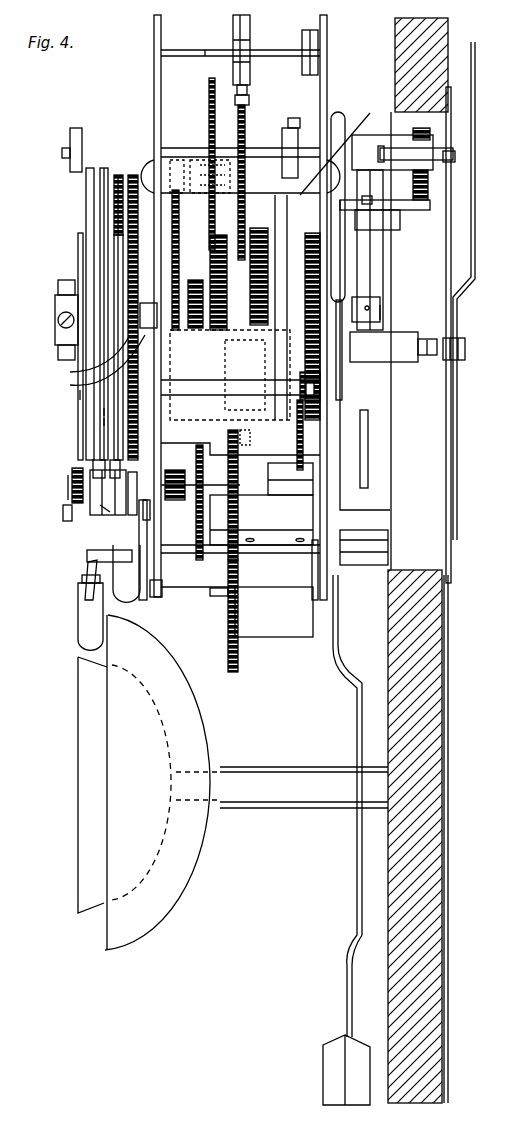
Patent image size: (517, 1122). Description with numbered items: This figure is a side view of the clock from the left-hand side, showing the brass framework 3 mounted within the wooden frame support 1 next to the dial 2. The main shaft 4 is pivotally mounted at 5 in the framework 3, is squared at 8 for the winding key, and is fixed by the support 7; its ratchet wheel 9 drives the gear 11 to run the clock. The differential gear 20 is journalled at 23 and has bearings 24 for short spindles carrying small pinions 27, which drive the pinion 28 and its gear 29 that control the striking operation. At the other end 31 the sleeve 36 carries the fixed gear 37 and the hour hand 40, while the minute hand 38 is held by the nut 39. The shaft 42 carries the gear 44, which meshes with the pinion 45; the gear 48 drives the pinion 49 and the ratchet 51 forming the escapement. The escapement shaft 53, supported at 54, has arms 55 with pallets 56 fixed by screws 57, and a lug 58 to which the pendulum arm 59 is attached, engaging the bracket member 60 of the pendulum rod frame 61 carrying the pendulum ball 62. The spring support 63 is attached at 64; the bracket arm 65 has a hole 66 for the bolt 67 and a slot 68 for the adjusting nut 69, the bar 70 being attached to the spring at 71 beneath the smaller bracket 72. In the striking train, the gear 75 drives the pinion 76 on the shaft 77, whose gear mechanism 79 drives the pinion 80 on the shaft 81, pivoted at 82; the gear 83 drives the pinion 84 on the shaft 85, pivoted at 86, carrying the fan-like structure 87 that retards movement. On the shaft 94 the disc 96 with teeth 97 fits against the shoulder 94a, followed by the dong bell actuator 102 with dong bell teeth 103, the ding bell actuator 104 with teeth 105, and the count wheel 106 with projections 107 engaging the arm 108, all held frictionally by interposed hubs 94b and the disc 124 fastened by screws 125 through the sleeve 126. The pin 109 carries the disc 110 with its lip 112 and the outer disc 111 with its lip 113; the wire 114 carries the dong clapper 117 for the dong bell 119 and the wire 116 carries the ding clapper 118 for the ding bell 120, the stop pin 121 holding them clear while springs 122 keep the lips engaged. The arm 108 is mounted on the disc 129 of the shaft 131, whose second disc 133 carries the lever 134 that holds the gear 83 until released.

The wooden frame support 1 is at (395, 857).
The dial 2 is at (448, 588).
The brass framework 3 is at (154, 24).
The main shaft 4 is at (320, 580).
The pivot mounting 5 is at (161, 597).
The support 7 is at (285, 570).
The squared end 8 is at (376, 540).
The ratchet wheel 9 is at (222, 596).
The gear 11 is at (238, 664).
The differential gear 20 is at (218, 258).
The journal 23 is at (105, 505).
The bearings 24 is at (248, 290).
The small pinion 27 is at (195, 280).
The pinion 28 is at (200, 338).
The gear 29 is at (179, 236).
The other end of spindle 31 is at (427, 362).
The sleeve 36 is at (404, 335).
The fixed gear 37 is at (315, 296).
The minute hand 38 is at (472, 42).
The nut 39 is at (460, 362).
The hour hand 40 is at (452, 522).
The shaft 42 is at (302, 250).
The gear 44 is at (183, 165).
The pinion 45 is at (195, 157).
The gear 48 is at (209, 84).
The pinion 49 is at (238, 136).
The ratchet 51 is at (282, 135).
The escapement shaft 53 is at (210, 48).
The support points 54 is at (168, 50).
The arms 55 is at (245, 20).
The pallets 56 is at (250, 92).
The screws 57 is at (250, 105).
The lug 58 is at (302, 36).
The pendulum arm 59 is at (340, 112).
The bracket member 60 is at (370, 445).
The pendulum rod frame 61 is at (340, 512).
The pendulum ball 62 is at (330, 1046).
The spring support 63 is at (368, 264).
The attachment point 64 is at (378, 316).
The bracket arm 65 is at (376, 140).
The hole 66 is at (413, 140).
The bolt 67 is at (413, 188).
The slot 68 is at (378, 154).
The adjusting nut 69 is at (453, 152).
The bar 70 is at (410, 210).
The attachment 71 is at (367, 198).
The smaller bracket 72 is at (368, 230).
The gear 75 is at (165, 465).
The pinion 76 is at (175, 498).
The shaft 77 is at (255, 495).
The gear mechanism 79 is at (204, 452).
The pinion 80 is at (240, 439).
The shaft 81 is at (303, 455).
The pivot 82 is at (322, 403).
The gear 83 is at (250, 468).
The pinion 84 is at (250, 468).
The shaft 85 is at (255, 388).
The pivot 86 is at (314, 389).
The fan-like structure 87 is at (268, 485).
The shaft 94 is at (148, 312).
The shoulder 94a is at (86, 363).
The interposed discs or hubs 94b is at (79, 356).
The disc 96 is at (134, 172).
The teeth 97 is at (120, 172).
The dong bell actuator 102 is at (117, 172).
The dong bell teeth 103 is at (108, 172).
The ding bell actuator 104 is at (103, 168).
The teeth 105 is at (104, 422).
The count wheel 106 is at (80, 396).
The projections 107 is at (104, 412).
The arm 108 is at (86, 186).
The pin or shaft 109 is at (118, 510).
The disc 110 is at (145, 490).
The outer disc 111 is at (95, 500).
The lip 112 is at (72, 483).
The lip 113 is at (93, 465).
The wire 114 is at (147, 592).
The wire 116 is at (85, 588).
The dong clapper 117 is at (126, 600).
The ding clapper 118 is at (82, 633).
The dong bell 119 is at (204, 720).
The ding bell 120 is at (78, 722).
The stop pin 121 is at (95, 560).
The spring 122 is at (72, 490).
The disc 124 is at (78, 238).
The screws 125 is at (58, 288).
The sleeve 126 is at (55, 340).
The disc 129 is at (70, 134).
The shaft 131 is at (62, 155).
The second disc 133 is at (296, 128).
The lever 134 is at (347, 146).